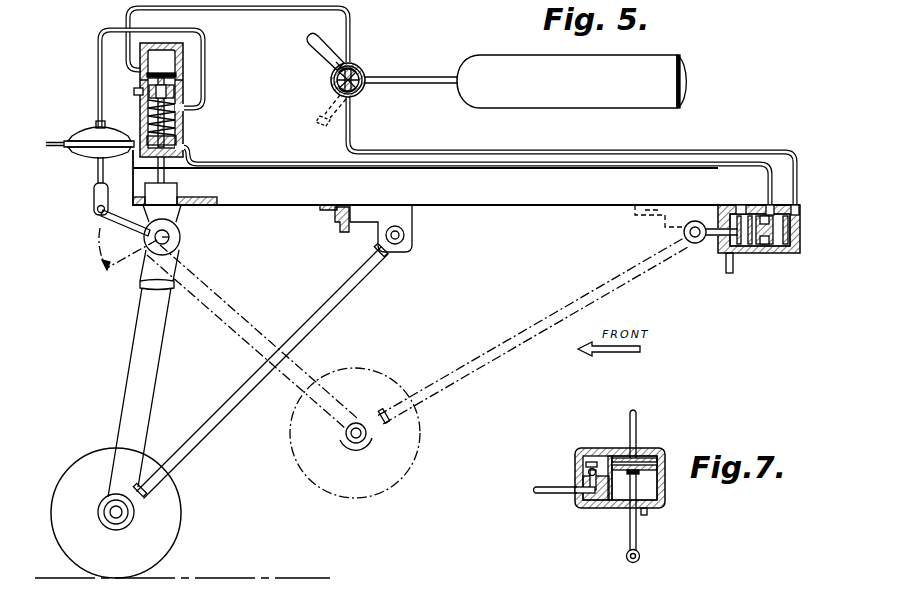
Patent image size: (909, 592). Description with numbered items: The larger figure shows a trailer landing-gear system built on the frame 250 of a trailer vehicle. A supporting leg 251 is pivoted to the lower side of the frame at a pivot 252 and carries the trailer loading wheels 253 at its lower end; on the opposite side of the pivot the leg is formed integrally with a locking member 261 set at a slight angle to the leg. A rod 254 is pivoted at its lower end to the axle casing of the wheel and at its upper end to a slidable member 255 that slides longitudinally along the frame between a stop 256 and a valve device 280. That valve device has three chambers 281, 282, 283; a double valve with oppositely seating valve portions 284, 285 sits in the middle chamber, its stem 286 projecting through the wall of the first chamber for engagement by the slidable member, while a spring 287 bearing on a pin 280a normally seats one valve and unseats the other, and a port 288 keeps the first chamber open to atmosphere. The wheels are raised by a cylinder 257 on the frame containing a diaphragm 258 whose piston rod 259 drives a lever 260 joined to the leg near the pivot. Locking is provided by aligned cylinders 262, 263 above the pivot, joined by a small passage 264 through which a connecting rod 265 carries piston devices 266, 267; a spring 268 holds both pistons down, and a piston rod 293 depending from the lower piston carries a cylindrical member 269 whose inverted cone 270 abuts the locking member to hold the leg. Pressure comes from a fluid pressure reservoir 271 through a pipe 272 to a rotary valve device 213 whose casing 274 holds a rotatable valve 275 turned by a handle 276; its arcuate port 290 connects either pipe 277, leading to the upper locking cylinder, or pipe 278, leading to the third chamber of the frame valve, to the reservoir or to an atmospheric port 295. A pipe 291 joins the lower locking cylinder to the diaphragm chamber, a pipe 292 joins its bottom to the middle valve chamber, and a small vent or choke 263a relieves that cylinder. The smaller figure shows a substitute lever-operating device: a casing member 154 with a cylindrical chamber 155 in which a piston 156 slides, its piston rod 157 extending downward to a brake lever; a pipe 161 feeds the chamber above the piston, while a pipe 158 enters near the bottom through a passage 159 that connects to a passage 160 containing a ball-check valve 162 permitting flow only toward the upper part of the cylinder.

In FIG. 5, the frame 250 is at (485, 200).
In FIG. 5, the supporting leg 251 is at (130, 363).
In FIG. 5, the pivot 252 is at (170, 238).
In FIG. 5, the trailer loading wheels 253 is at (170, 543).
In FIG. 5, the rod 254 is at (306, 330).
In FIG. 5, the slidable member 255 is at (636, 225).
In FIG. 5, the stop 256 is at (336, 216).
In FIG. 5, the cylinder 257 is at (85, 131).
In FIG. 5, the diaphragm 258 is at (62, 143).
In FIG. 5, the piston rod 259 is at (98, 165).
In FIG. 5, the lever 260 is at (118, 220).
In FIG. 5, the locking member 261 is at (179, 232).
In FIG. 5, the cylinder 262 is at (184, 58).
In FIG. 5, the cylinder 263 is at (183, 94).
In FIG. 5, the atmospheric vent or choke 263a is at (140, 92).
In FIG. 5, the small passage 264 is at (165, 88).
In FIG. 5, the connecting rod 265 is at (150, 104).
In FIG. 5, the piston device 266 is at (177, 74).
In FIG. 5, the piston device 267 is at (177, 139).
In FIG. 5, the spring 268 is at (177, 122).
In FIG. 5, the cylindrical member 269 is at (170, 189).
In FIG. 5, the inverted pyramid or cone 270 is at (176, 212).
In FIG. 5, the fluid pressure reservoir 271 is at (566, 102).
In FIG. 5, the pipe 272 is at (413, 82).
In FIG. 5, the control valve 213 is at (357, 62).
In FIG. 5, the casing 274 is at (366, 72).
In FIG. 5, the rotatable valve 275 is at (334, 70).
In FIG. 5, the handle 276 is at (319, 123).
In FIG. 5, the pipe 277 is at (346, 24).
In FIG. 5, the pipe 278 is at (519, 150).
In FIG. 5, the valve device 280 is at (748, 256).
In FIG. 5, the pin 280a is at (737, 206).
In FIG. 5, the chamber 281 is at (757, 213).
In FIG. 5, the chamber 282 is at (763, 252).
In FIG. 5, the chamber 283 is at (780, 251).
In FIG. 5, the valve portion 284 is at (766, 200).
In FIG. 5, the valve portion 285 is at (769, 187).
In FIG. 5, the stem 286 is at (737, 240).
In FIG. 5, the spring 287 is at (730, 256).
In FIG. 5, the port 288 is at (726, 268).
In FIG. 5, the arcuate port 290 is at (346, 92).
In FIG. 5, the pipe 291 is at (98, 60).
In FIG. 5, the pipe 292 is at (375, 162).
In FIG. 5, the piston rod 293 is at (165, 173).
In FIG. 5, the port 295 is at (336, 80).
In FIG. 7, the casing member 154 is at (616, 500).
In FIG. 7, the cylindrical chamber 155 is at (647, 488).
In FIG. 7, the piston 156 is at (657, 467).
In FIG. 7, the piston rod 157 is at (637, 549).
In FIG. 7, the pipe 158 is at (565, 490).
In FIG. 7, the passage 159 is at (616, 509).
In FIG. 7, the passage 160 is at (625, 450).
In FIG. 7, the pipe 161 is at (637, 438).
In FIG. 7, the ball-check valve 162 is at (587, 474).